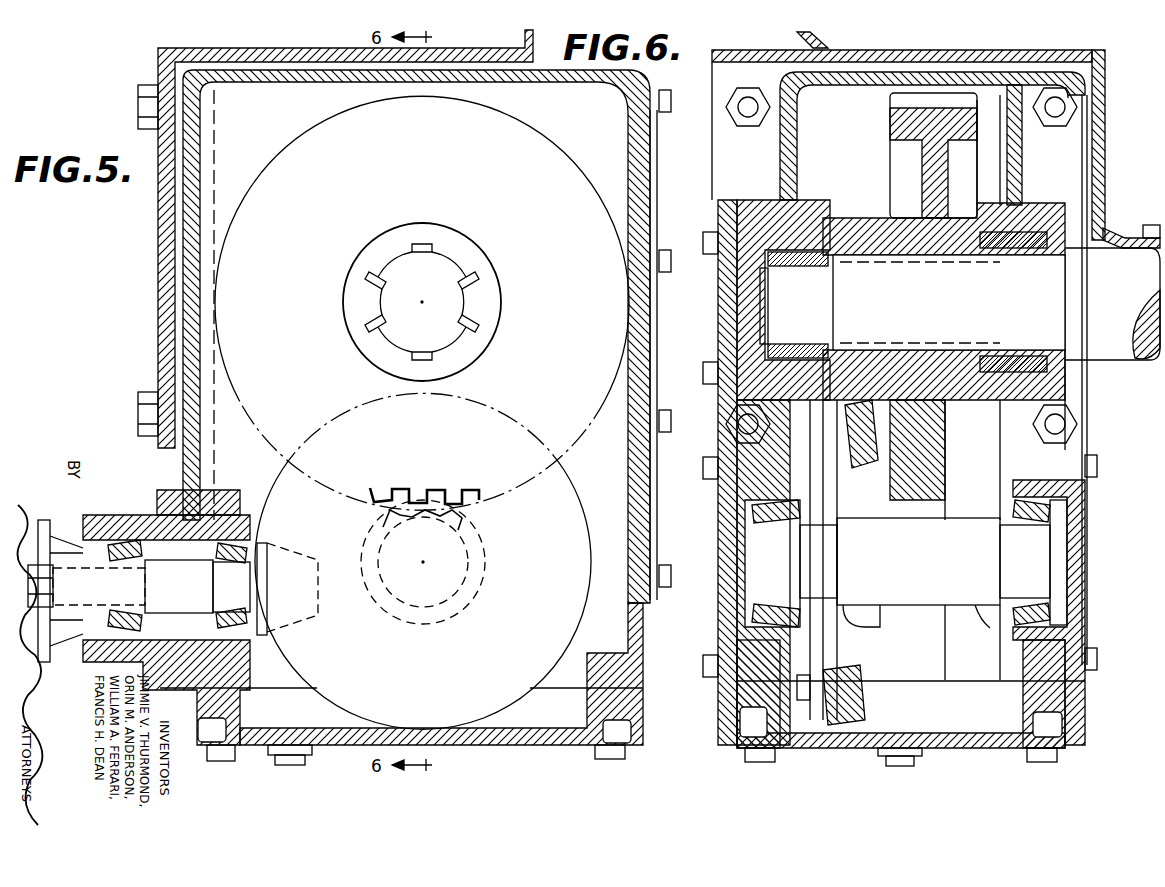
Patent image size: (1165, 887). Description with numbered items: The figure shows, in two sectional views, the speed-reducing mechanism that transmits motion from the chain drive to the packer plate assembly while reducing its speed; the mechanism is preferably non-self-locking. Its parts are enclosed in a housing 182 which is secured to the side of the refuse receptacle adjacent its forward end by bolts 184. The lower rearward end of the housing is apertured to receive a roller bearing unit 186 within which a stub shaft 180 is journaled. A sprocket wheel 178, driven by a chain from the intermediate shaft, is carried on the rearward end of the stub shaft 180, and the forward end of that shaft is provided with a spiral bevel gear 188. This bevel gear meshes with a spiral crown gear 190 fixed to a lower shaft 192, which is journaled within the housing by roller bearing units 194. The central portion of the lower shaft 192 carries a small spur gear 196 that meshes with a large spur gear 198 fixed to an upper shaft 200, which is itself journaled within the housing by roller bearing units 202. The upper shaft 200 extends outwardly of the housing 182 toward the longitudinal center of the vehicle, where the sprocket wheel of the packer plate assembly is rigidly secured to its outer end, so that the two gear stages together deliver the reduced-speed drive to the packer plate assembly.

In FIG. 5, the sprocket wheel 178 is at (50, 522).
In FIG. 5, the stub shaft 180 is at (196, 597).
In FIG. 5, the housing 182 is at (596, 76).
In FIG. 6, the housing 182 is at (1012, 168).
In FIG. 5, the bolts 184 is at (140, 103).
In FIG. 6, the bolts 184 is at (748, 126).
In FIG. 5, the roller bearing unit 186 is at (172, 515).
In FIG. 5, the spiral bevel gear 188 is at (280, 612).
In FIG. 5, the spiral crown gear 190 is at (560, 486).
In FIG. 6, the spiral crown gear 190 is at (866, 430).
In FIG. 5, the lower shaft 192 is at (462, 576).
In FIG. 6, the lower shaft 192 is at (900, 607).
In FIG. 6, the roller bearing units 194 is at (750, 512).
In FIG. 5, the small spur gear 196 is at (462, 515).
In FIG. 6, the small spur gear 196 is at (991, 625).
In FIG. 5, the large spur gear 198 is at (372, 503).
In FIG. 6, the large spur gear 198 is at (950, 455).
In FIG. 5, the upper shaft 200 is at (456, 298).
In FIG. 6, the upper shaft 200 is at (1105, 350).
In FIG. 6, the roller bearing units 202 is at (770, 275).